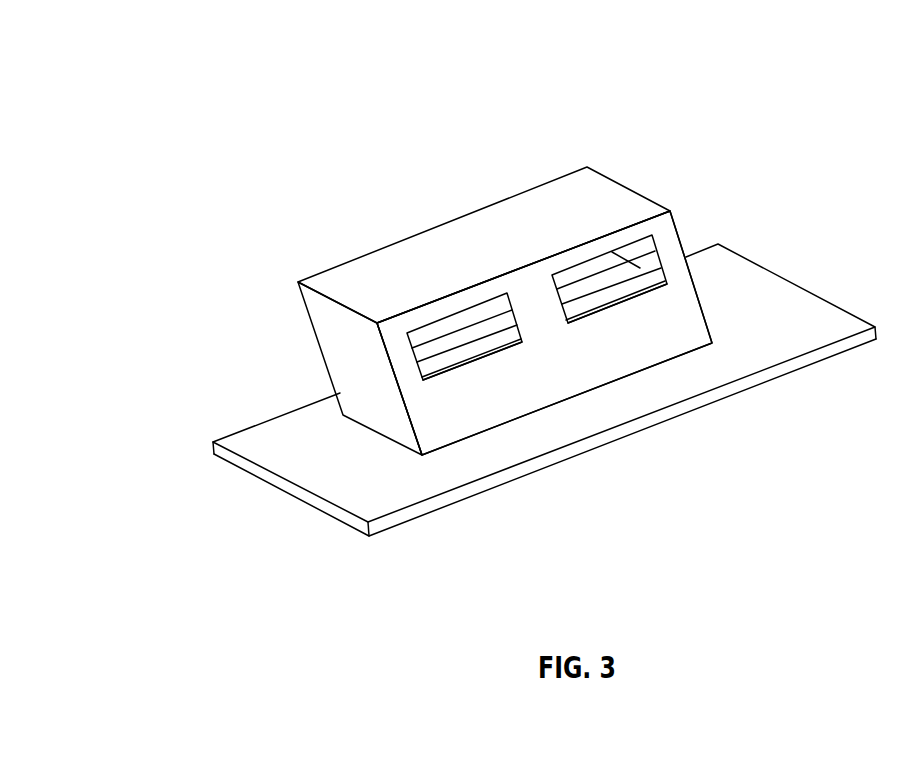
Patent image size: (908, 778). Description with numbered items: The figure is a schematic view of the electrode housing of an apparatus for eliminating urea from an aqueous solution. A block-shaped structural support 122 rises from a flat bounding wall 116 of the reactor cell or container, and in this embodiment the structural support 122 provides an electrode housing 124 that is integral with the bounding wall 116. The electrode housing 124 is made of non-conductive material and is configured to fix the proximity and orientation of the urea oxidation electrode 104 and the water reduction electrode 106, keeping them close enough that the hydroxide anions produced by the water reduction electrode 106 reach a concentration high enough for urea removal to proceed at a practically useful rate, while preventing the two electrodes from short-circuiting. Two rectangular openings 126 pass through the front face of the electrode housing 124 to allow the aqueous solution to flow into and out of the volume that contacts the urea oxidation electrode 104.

The urea oxidation electrode 104 is at (642, 282).
The water reduction electrode 106 is at (453, 323).
The bounding wall 116 is at (272, 443).
The structural support 122 is at (687, 313).
The electrode housing 124 is at (617, 168).
The openings 126 is at (467, 363).